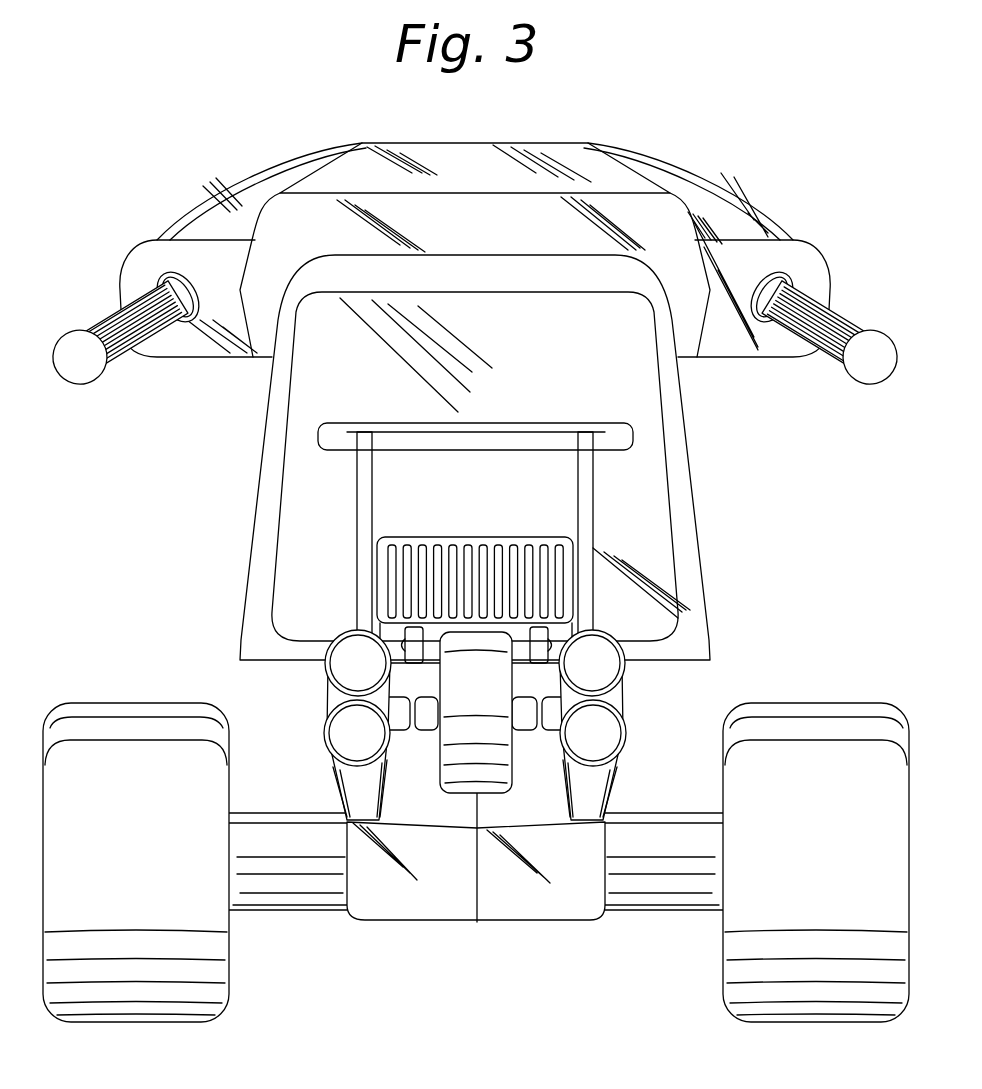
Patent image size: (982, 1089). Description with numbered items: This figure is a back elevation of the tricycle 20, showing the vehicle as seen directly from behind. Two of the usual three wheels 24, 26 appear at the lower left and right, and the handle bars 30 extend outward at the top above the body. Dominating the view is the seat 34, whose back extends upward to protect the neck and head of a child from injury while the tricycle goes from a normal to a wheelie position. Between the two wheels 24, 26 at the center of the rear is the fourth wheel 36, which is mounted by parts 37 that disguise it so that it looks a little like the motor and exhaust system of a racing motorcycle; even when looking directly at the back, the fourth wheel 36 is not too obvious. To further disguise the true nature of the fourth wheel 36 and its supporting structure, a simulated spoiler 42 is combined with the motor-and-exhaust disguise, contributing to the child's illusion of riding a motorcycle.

The tricycle 20 is at (476, 582).
The wheel 24 is at (140, 703).
The wheel 26 is at (836, 703).
The handle bars 30 is at (881, 387).
The seat 34 is at (705, 497).
The fourth wheel 36 is at (497, 753).
The parts 37 is at (503, 817).
The simulated spoiler 42 is at (417, 420).